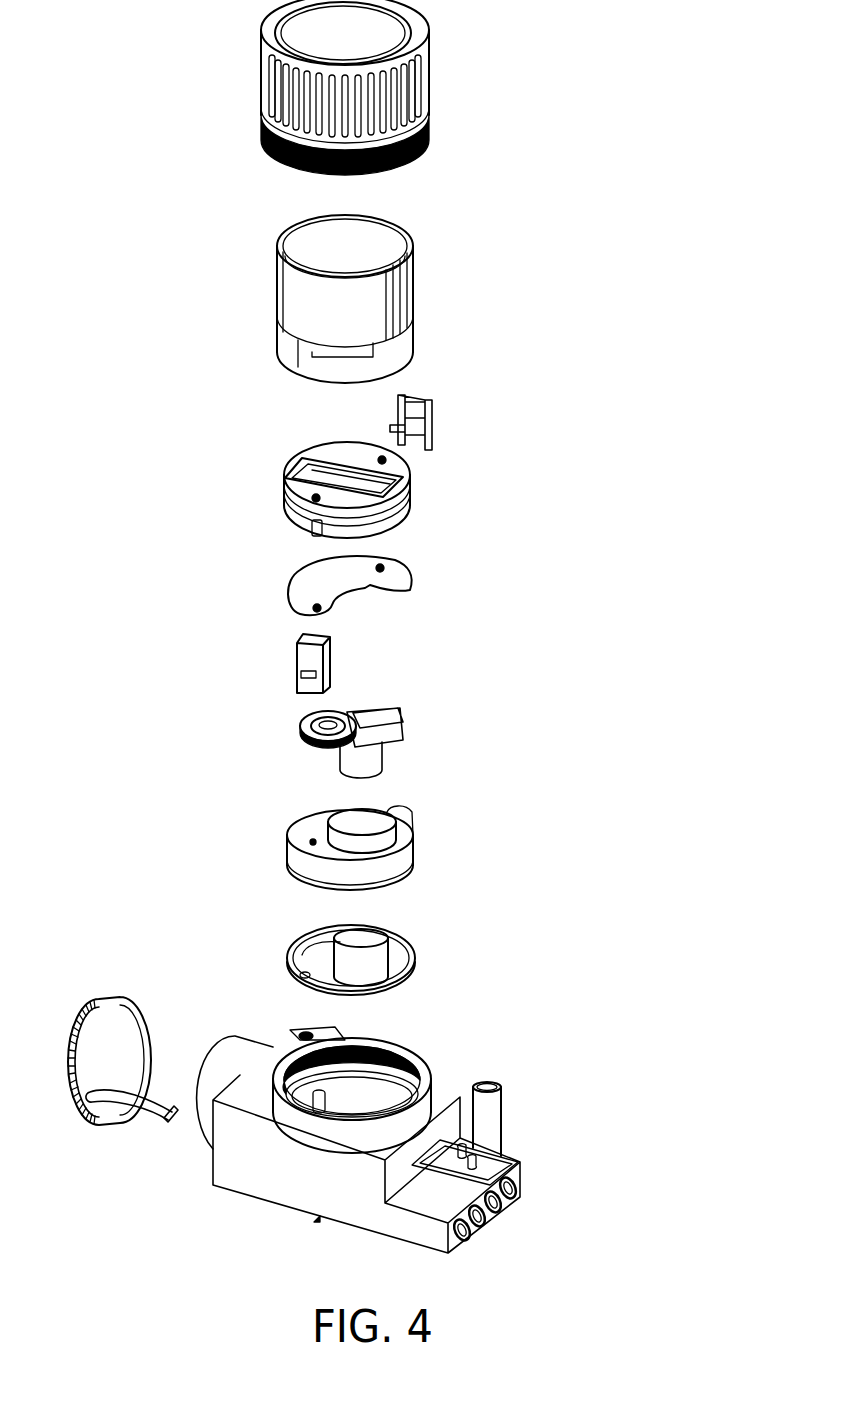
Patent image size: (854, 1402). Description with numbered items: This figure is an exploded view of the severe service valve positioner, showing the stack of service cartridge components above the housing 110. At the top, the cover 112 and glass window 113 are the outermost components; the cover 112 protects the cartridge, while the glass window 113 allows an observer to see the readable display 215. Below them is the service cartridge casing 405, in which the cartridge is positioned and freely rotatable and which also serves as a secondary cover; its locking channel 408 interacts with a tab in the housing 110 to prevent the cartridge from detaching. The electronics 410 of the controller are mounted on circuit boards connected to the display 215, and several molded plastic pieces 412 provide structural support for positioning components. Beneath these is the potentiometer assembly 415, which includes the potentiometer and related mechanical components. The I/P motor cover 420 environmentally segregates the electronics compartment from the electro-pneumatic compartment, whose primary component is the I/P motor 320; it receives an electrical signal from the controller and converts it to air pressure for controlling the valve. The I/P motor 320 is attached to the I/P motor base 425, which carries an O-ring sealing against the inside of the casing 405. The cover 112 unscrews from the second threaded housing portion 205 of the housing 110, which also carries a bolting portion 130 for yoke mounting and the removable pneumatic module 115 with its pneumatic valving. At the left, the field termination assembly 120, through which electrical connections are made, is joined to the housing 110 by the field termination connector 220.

The cover 112 is at (422, 28).
The glass window 113 is at (367, 45).
The service cartridge casing 405 is at (415, 278).
The locking channel 408 is at (303, 367).
The readable display 215 is at (300, 463).
The electronics 410 is at (308, 493).
The molded plastic pieces 412 is at (433, 427).
The potentiometer assembly 415 is at (300, 723).
The I/P motor cover 420 is at (413, 835).
The I/P motor 320 is at (372, 942).
The I/P motor base 425 is at (408, 965).
The housing 110 is at (397, 1123).
The second threaded housing portion 205 is at (300, 1053).
The bolting portion 130 is at (501, 1088).
The pneumatic module 115 is at (480, 1173).
The field termination assembly 120 is at (90, 1010).
The field termination connector 220 is at (150, 1110).